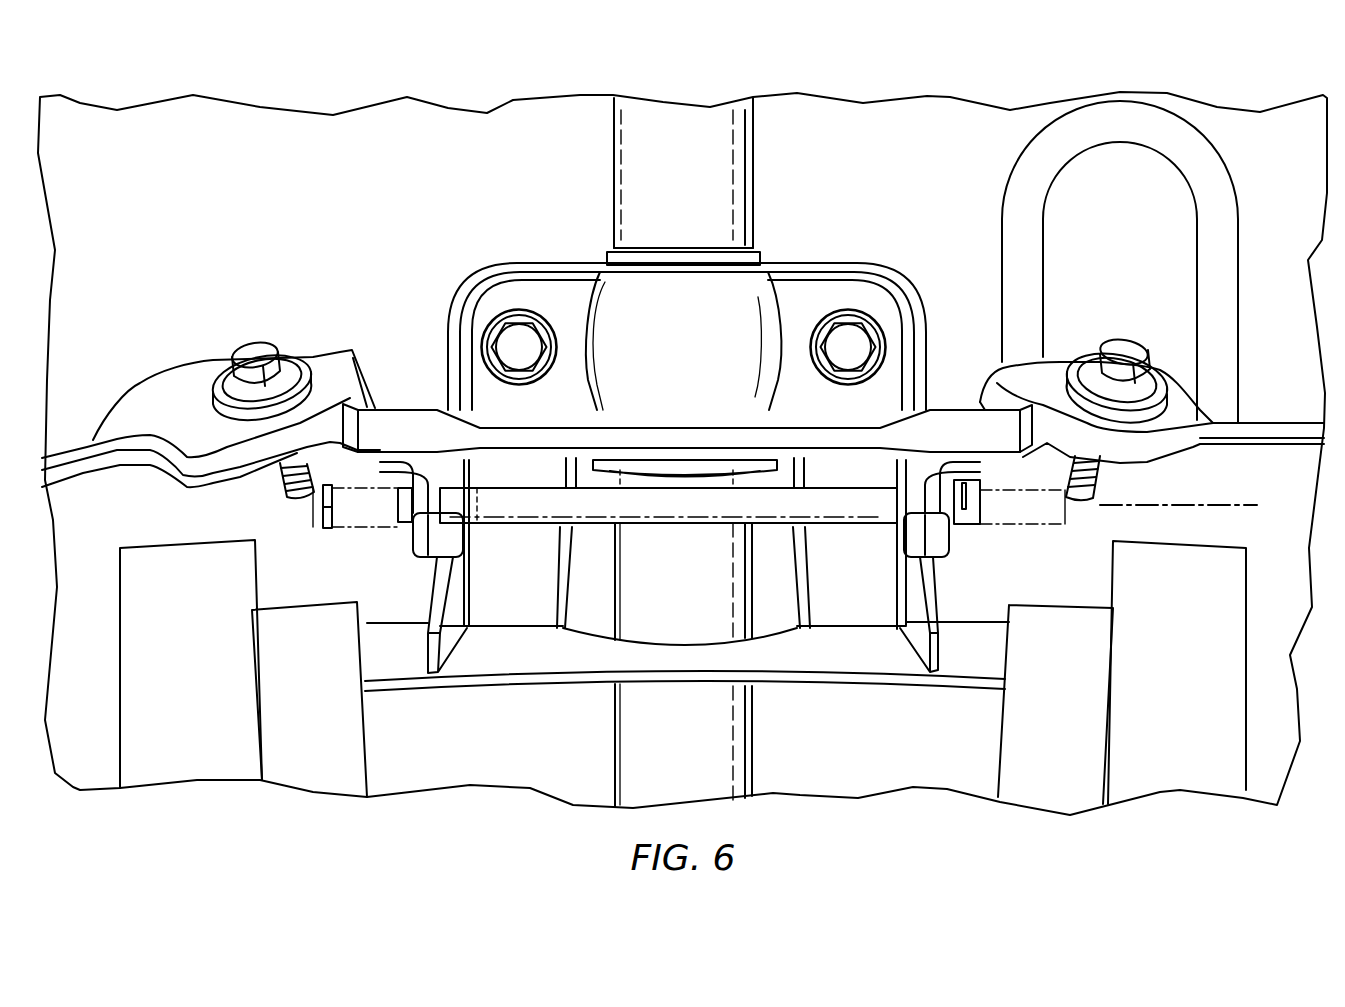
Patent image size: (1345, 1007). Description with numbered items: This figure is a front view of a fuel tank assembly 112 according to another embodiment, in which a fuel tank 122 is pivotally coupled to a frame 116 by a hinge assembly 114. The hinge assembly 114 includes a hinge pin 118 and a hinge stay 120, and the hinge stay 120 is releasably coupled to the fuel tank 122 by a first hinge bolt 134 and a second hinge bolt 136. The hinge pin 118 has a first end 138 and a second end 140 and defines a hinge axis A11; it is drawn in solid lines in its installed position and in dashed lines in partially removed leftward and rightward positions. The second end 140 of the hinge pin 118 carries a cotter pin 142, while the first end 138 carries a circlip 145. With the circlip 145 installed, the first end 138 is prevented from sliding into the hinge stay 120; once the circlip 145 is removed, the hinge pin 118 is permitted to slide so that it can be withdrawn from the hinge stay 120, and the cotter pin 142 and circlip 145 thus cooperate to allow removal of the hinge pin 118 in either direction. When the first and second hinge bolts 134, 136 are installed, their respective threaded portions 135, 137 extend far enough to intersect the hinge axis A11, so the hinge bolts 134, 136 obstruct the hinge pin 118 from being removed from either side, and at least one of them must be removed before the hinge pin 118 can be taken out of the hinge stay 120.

The fuel tank assembly 112 is at (286, 80).
The hinge assembly 114 is at (397, 243).
The frame 116 is at (968, 634).
The hinge pin 118 is at (689, 528).
The hinge stay 120 is at (570, 437).
The fuel tank 122 is at (158, 128).
The first hinge bolt 134 is at (252, 350).
The threaded portion of first hinge bolt 135 is at (283, 493).
The second hinge bolt 136 is at (1130, 340).
The threaded portion of second hinge bolt 137 is at (1098, 490).
The first end of hinge pin 138 is at (519, 527).
The second end of hinge pin 140 is at (845, 527).
The cotter pin 142 is at (968, 496).
The circlip 145 is at (398, 505).
The hinge axis A11 is at (1202, 506).